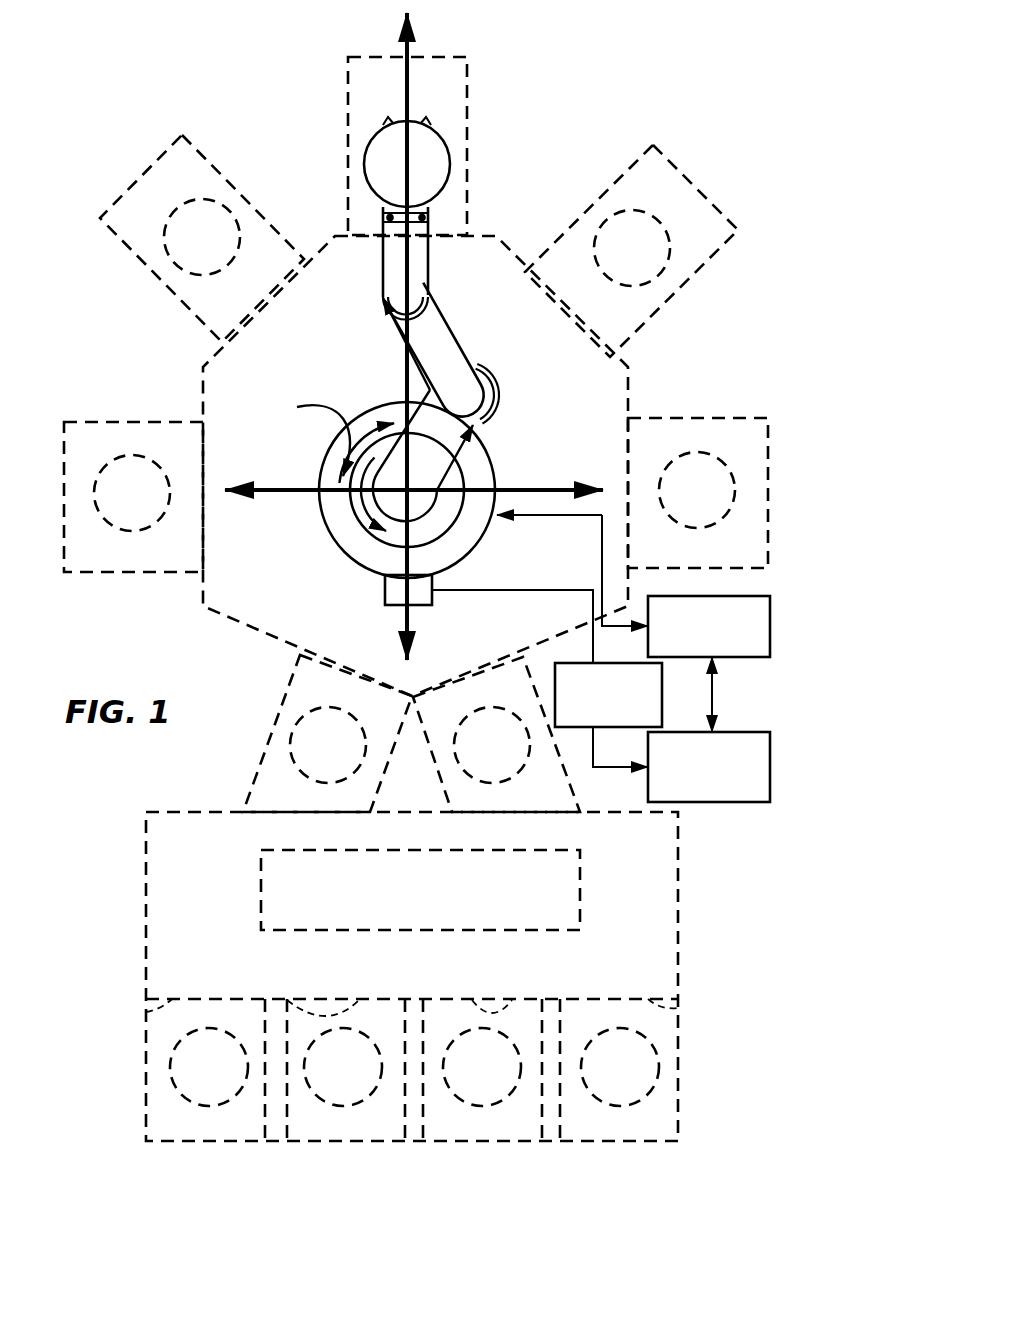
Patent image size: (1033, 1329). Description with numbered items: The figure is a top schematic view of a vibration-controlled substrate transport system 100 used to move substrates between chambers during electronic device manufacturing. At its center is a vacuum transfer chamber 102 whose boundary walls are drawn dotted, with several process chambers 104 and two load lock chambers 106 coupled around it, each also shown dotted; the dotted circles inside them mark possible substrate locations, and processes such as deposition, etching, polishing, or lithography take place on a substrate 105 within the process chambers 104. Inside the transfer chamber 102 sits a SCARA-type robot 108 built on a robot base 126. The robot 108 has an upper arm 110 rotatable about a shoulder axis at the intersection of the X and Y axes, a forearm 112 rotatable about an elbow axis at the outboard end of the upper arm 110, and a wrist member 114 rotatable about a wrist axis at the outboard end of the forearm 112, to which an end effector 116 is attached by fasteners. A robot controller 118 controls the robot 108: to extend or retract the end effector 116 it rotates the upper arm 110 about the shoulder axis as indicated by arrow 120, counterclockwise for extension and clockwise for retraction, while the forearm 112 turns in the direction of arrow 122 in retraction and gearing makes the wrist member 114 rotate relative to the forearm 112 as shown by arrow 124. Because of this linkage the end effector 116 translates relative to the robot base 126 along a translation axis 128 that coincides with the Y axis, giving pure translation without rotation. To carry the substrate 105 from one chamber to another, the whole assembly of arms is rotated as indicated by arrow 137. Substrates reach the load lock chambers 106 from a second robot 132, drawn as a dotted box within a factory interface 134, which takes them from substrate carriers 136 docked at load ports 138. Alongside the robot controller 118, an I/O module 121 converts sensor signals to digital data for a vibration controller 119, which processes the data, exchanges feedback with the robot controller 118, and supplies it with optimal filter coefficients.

The substrate transport system 100 is at (557, 133).
The vacuum transfer chamber 102 is at (415, 466).
The process chamber 104 is at (433, 105).
The substrate 105 is at (388, 160).
The load lock chamber 106 is at (411, 733).
The robot 108 is at (498, 533).
The upper arm 110 is at (427, 458).
The forearm 112 is at (435, 352).
The wrist member 114 is at (418, 263).
The end effector 116 is at (387, 117).
The robot controller 118 is at (770, 617).
The vibration controller 119 is at (770, 760).
The arrow 120 is at (368, 515).
The I/O module 121 is at (567, 663).
The arrow 122 is at (497, 403).
The arrow 124 is at (415, 313).
The robot base 126 is at (363, 552).
The translation axis 128 is at (403, 373).
The robot 132 is at (420, 890).
The factory interface 134 is at (412, 976).
The substrate carrier 136 is at (146, 1060).
The arrow 137 is at (302, 435).
The load port 138 is at (146, 1012).